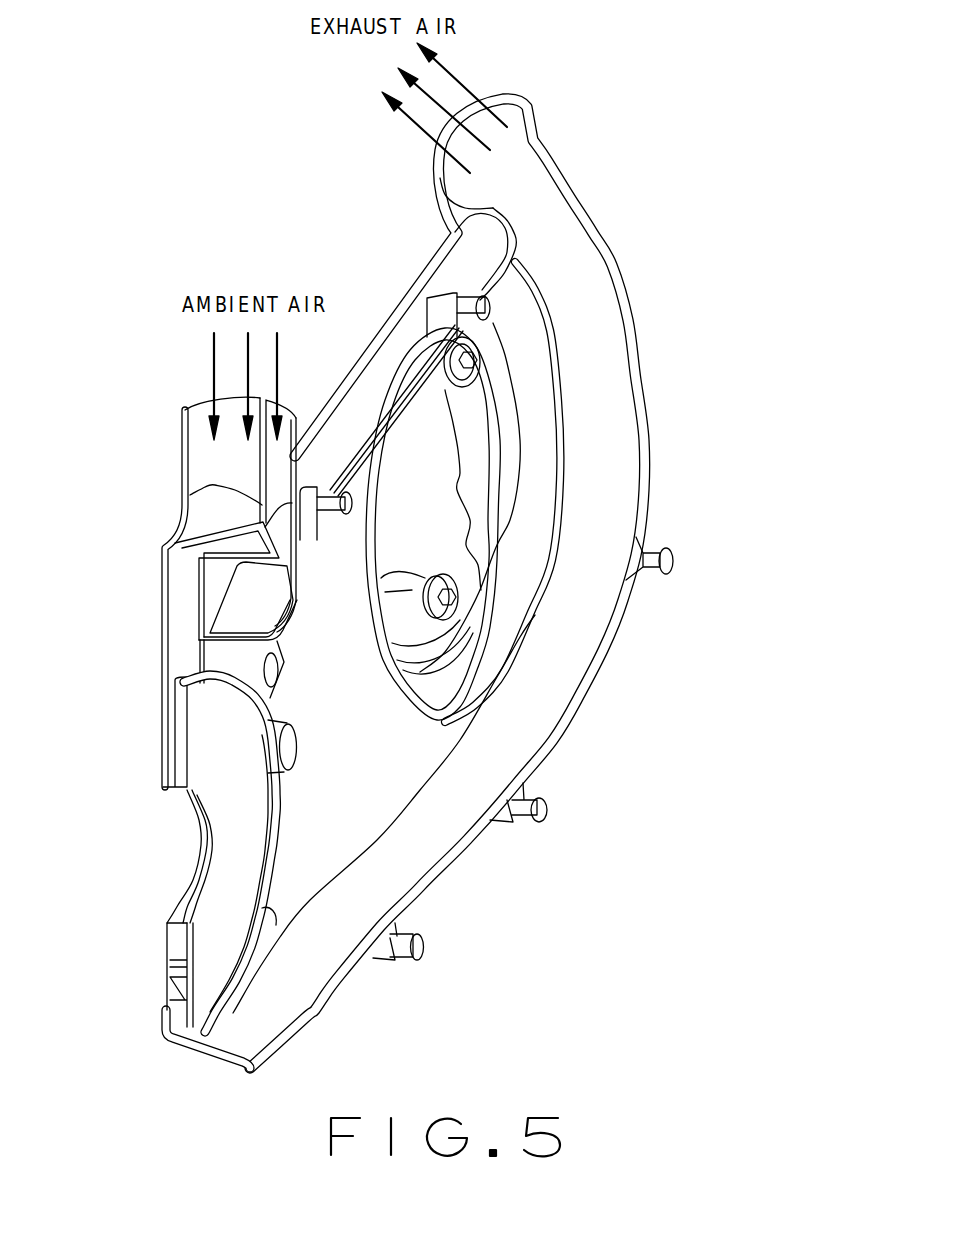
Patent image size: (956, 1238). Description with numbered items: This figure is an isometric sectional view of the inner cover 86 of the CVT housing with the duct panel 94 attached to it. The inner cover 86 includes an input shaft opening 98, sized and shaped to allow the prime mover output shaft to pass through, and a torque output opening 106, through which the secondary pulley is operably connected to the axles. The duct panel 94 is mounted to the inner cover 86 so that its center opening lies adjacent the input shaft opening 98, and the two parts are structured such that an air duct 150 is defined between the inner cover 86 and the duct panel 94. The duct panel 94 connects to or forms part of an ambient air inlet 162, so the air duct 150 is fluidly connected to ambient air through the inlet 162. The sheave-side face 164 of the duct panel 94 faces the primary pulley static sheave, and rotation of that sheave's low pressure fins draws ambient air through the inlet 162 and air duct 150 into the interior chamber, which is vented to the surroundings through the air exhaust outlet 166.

The inner cover 86 is at (597, 337).
The duct panel 94 is at (286, 806).
The input shaft opening 98 is at (183, 883).
The torque output opening 106 is at (423, 450).
The air duct 150 is at (212, 465).
The ambient air inlet 162 is at (193, 413).
The sheave-side face 164 is at (240, 880).
The air exhaust outlet 166 is at (528, 108).